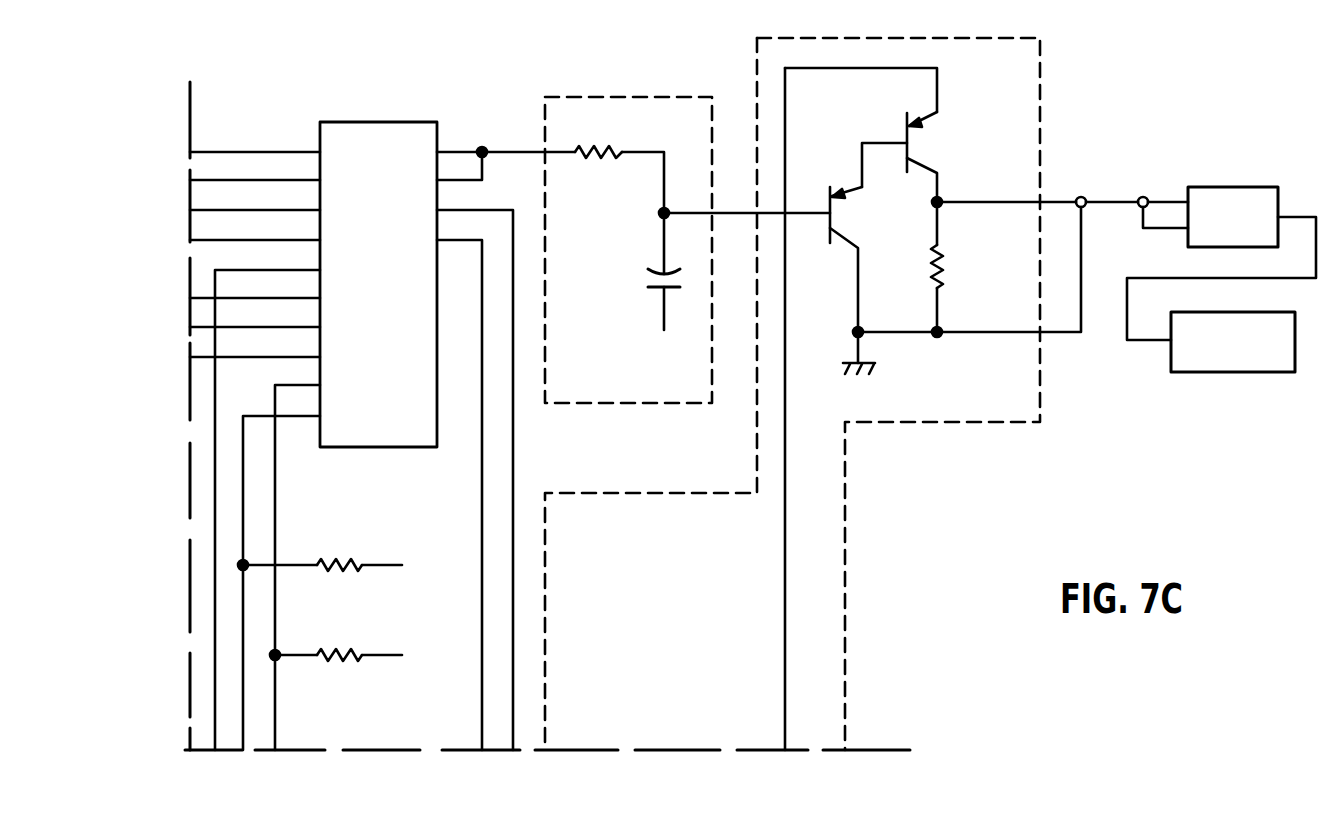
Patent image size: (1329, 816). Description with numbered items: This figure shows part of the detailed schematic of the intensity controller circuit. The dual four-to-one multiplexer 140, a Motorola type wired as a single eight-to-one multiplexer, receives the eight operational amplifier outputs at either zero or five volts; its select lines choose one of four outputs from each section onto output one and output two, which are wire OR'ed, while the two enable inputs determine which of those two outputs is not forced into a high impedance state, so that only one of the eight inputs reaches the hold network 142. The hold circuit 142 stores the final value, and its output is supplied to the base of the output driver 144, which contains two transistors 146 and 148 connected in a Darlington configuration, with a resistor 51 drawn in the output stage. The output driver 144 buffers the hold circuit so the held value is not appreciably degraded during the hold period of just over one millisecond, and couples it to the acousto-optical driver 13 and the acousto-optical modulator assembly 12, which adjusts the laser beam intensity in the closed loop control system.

The acousto-optical modulator assembly 12 is at (1190, 372).
The acousto-optical driver 13 is at (1223, 187).
The resistor 51 is at (949, 291).
The dual 4-to-1 multiplexer 140 is at (376, 122).
The hold circuit 142 is at (585, 93).
The output driver 144 is at (866, 394).
The transistor 146 is at (850, 212).
The transistor 148 is at (923, 153).